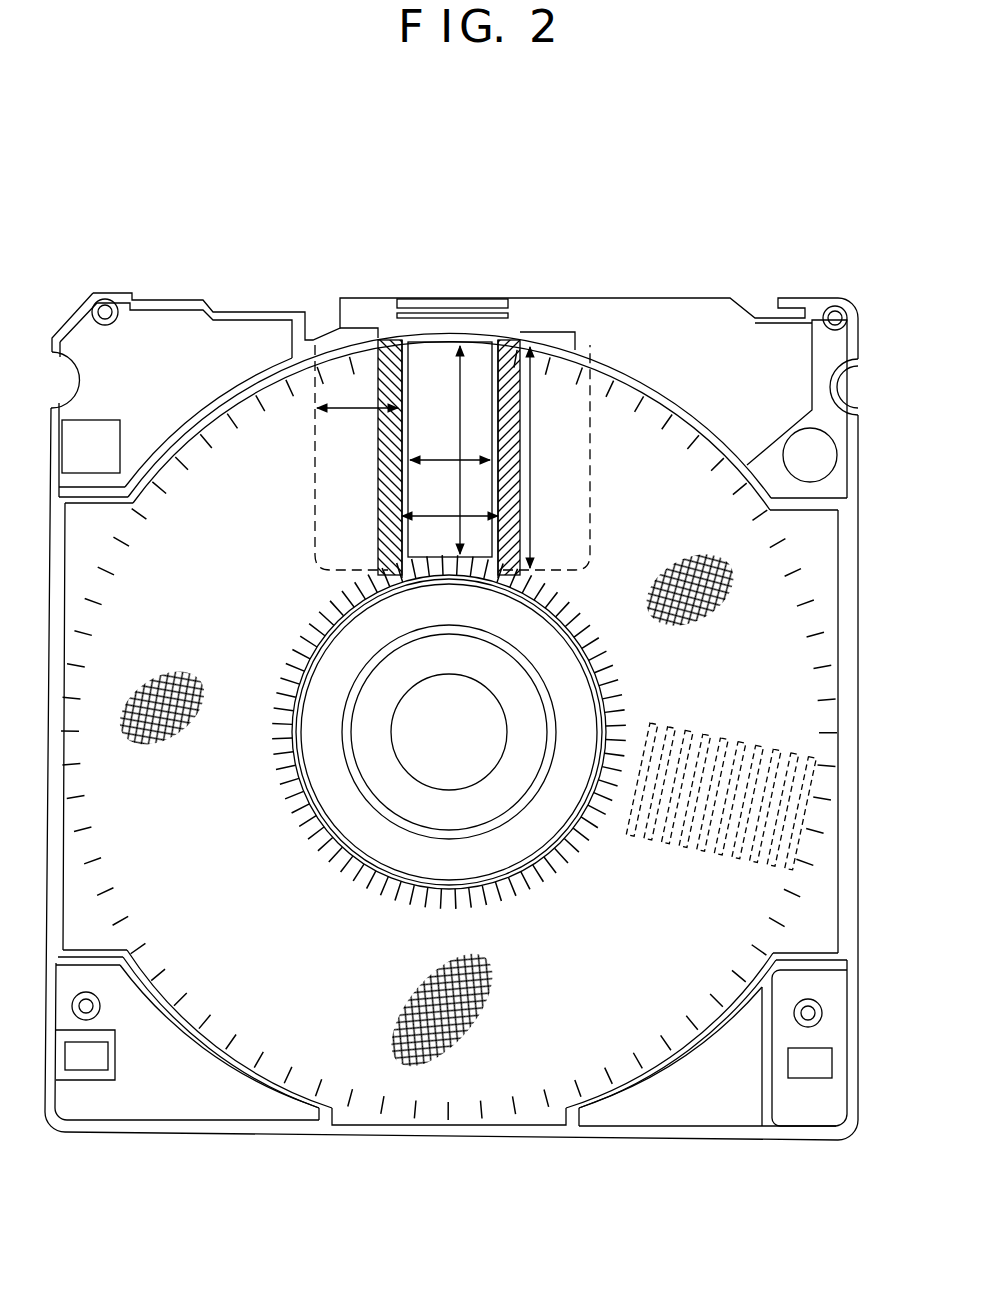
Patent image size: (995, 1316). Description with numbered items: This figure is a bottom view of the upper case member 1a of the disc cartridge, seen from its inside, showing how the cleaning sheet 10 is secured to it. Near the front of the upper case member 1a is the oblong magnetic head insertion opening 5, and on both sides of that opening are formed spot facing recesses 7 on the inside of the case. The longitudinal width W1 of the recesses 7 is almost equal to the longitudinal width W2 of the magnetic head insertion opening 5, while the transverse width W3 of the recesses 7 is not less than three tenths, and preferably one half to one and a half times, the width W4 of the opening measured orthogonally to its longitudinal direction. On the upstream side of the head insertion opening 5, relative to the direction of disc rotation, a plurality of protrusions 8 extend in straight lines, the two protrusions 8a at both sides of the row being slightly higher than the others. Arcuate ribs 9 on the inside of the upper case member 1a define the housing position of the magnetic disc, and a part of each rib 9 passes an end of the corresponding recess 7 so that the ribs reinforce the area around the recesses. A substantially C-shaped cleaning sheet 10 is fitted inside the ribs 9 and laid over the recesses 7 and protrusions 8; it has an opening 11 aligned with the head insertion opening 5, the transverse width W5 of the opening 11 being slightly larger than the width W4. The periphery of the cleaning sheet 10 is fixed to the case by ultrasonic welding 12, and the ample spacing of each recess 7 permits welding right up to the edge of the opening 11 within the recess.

The upper case member 1a is at (668, 322).
The magnetic head insertion opening 5 is at (493, 377).
The spot facing recesses 7 is at (315, 345).
The protrusions 8 is at (803, 752).
The protrusions 8a is at (645, 745).
The arcuate ribs 9 is at (212, 395).
The cleaning sheet 10 is at (733, 600).
The opening 11 is at (428, 365).
The ultrasonic welding 12 is at (507, 350).
The longitudinal width of the recesses W1 is at (530, 500).
The longitudinal width of the magnetic head insertion opening W2 is at (458, 373).
The transverse width of the recesses W3 is at (317, 410).
The width of the magnetic head insertion opening W4 is at (443, 460).
The transverse width of the opening W5 is at (433, 516).